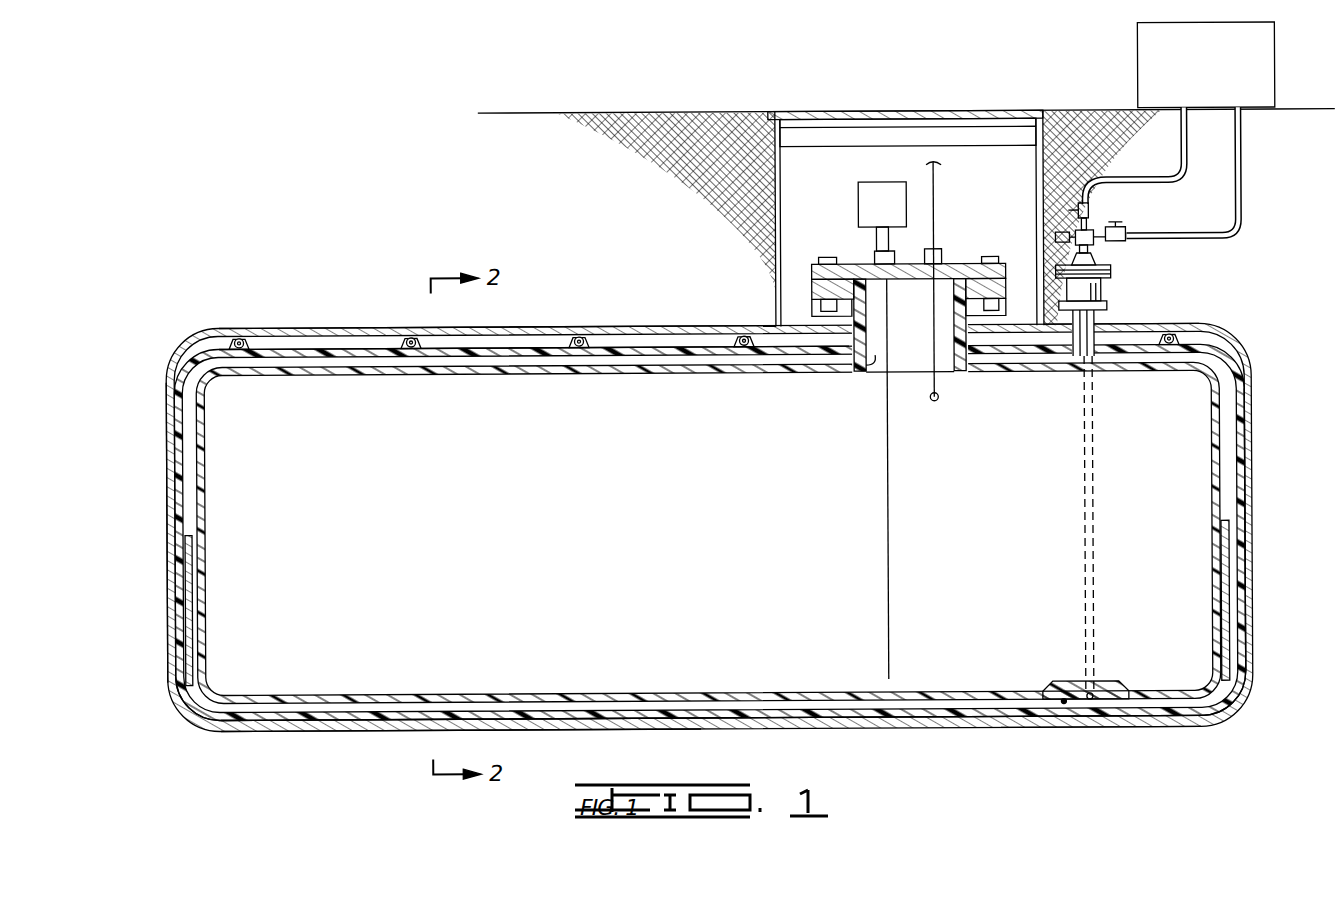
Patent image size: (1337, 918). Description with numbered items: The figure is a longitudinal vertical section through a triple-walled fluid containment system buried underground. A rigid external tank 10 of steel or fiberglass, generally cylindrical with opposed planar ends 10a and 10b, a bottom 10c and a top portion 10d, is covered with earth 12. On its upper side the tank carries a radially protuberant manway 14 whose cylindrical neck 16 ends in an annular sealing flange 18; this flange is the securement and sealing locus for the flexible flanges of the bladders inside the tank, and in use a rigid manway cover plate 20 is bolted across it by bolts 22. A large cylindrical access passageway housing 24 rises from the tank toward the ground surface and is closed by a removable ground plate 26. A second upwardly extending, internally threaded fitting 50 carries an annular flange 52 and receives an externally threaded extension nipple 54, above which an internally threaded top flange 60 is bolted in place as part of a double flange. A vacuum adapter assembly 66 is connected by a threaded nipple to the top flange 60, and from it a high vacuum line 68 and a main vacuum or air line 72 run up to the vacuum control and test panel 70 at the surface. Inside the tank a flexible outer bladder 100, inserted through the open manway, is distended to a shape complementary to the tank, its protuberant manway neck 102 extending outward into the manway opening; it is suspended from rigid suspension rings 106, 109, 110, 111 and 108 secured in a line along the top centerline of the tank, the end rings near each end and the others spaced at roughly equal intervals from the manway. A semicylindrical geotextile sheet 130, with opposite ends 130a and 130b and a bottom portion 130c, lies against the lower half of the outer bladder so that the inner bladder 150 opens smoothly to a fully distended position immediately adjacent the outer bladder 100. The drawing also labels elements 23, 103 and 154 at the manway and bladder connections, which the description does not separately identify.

The external tank 10 is at (330, 328).
The tank end 10a is at (165, 438).
The tank end 10b is at (1253, 455).
The tank bottom 10c is at (645, 728).
The tank top portion 10d is at (540, 330).
The earth 12 is at (690, 112).
The manway 14 is at (1008, 309).
The neck 16 is at (826, 312).
The annular sealing flange 18 is at (985, 288).
The manway cover plate 20 is at (848, 262).
The bolts 22 is at (828, 258).
The gasket / clamp ring 23 is at (985, 305).
The access passageway housing 24 is at (1030, 165).
The ground plate 26 is at (948, 118).
The fitting 50 is at (1105, 320).
The annular flange 52 is at (1103, 300).
The extension nipple 54 is at (1103, 285).
The top flange 60 is at (1110, 268).
The vacuum adapter assembly 66 is at (1112, 213).
The high vacuum line 68 is at (1190, 166).
The vacuum control and test panel 70 is at (1200, 64).
The main vacuum or air line 72 is at (1243, 206).
The outer bladder 100 is at (300, 346).
The manway neck 102 is at (858, 308).
The clamp block 103 is at (811, 288).
The suspension ring 106 is at (237, 336).
The suspension ring 108 is at (1190, 328).
The suspension ring 109 is at (743, 338).
The suspension ring 110 is at (585, 338).
The suspension ring 111 is at (414, 336).
The geotextile sheet 130 is at (1022, 722).
The geotextile sheet end 130a is at (185, 614).
The geotextile sheet end 130b is at (1253, 598).
The bottom portion 130c is at (355, 720).
The inner bladder 150 is at (540, 686).
The inner wall lip 154 is at (870, 350).